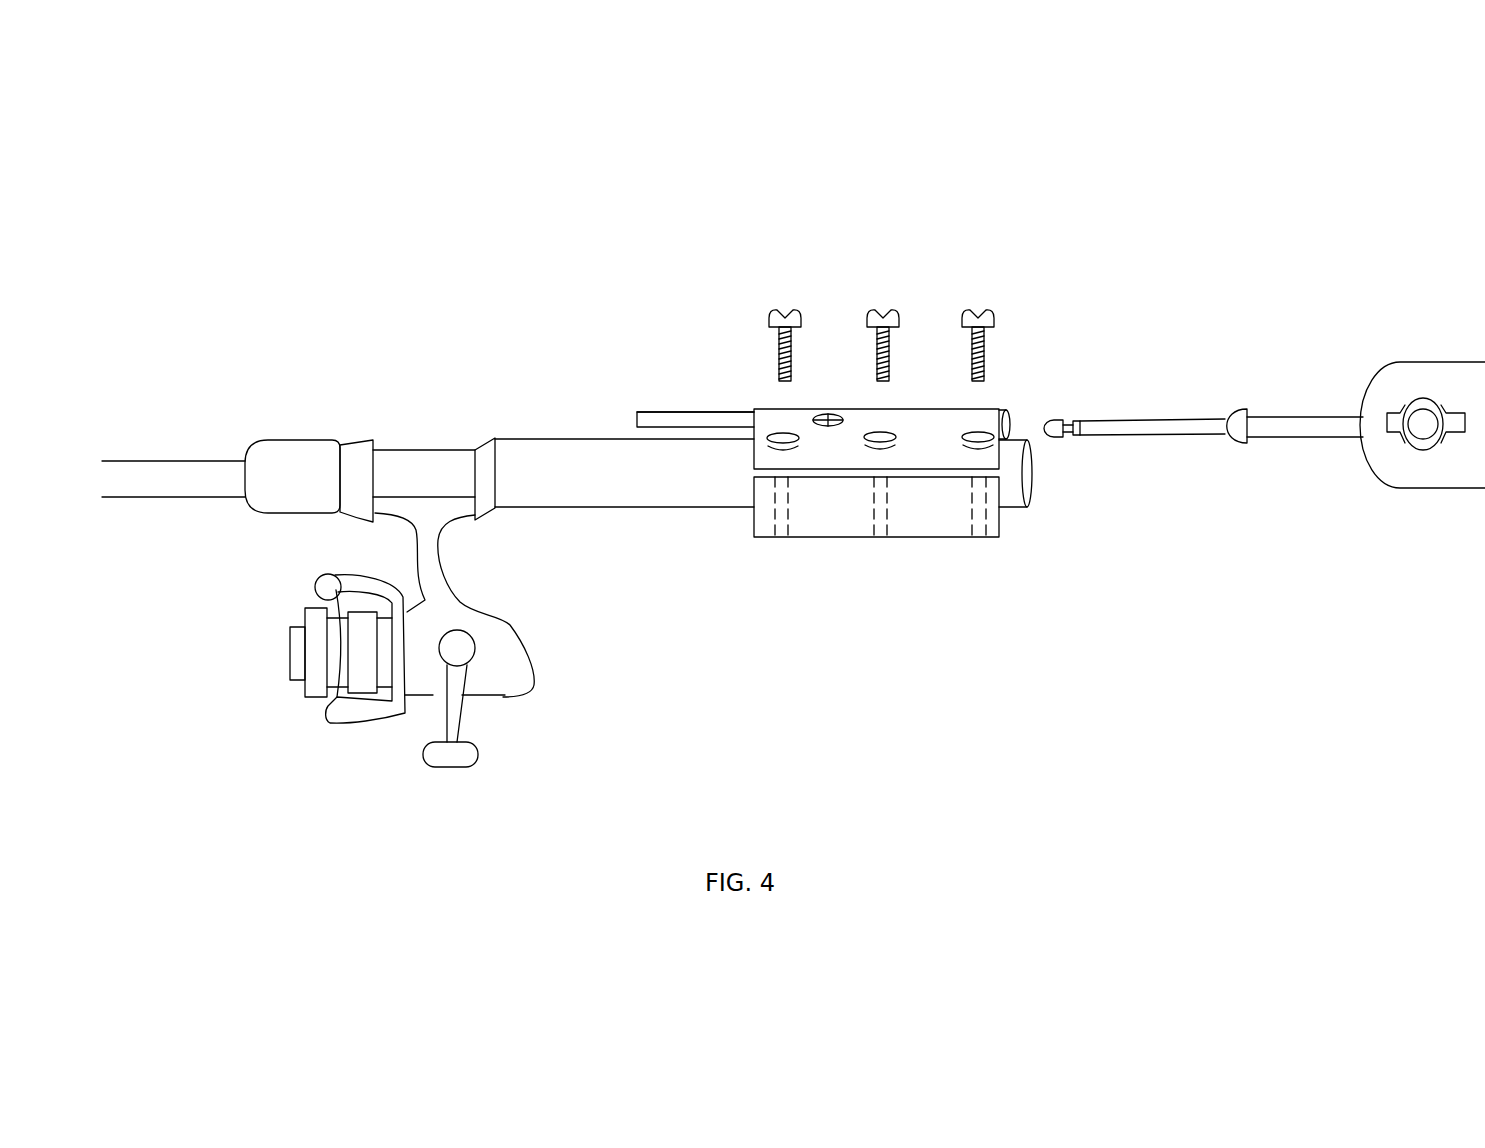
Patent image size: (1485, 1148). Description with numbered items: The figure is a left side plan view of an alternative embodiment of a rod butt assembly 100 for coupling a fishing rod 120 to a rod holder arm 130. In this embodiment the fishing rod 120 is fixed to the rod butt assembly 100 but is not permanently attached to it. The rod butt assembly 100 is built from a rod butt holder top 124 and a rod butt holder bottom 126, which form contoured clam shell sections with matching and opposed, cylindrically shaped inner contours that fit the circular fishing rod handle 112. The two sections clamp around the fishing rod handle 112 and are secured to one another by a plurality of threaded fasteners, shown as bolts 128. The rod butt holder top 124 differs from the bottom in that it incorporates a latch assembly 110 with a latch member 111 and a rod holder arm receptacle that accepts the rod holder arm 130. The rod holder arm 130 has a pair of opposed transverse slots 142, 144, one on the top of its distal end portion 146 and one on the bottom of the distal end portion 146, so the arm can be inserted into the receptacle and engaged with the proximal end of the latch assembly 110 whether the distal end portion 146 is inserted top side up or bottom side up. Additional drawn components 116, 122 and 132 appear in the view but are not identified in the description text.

The rod butt assembly 100 is at (985, 232).
The latch assembly 110 is at (817, 418).
The latch member 111 is at (650, 412).
The fishing rod handle 112 is at (628, 503).
The mounting plate 116 is at (678, 412).
The fishing rod 120 is at (300, 440).
The fishing reel 122 is at (505, 697).
The rod butt holder top 124 is at (990, 408).
The rod butt holder bottom 126 is at (940, 537).
The bolts 128 is at (975, 312).
The rod holder arm 130 is at (1203, 410).
The wing nut 132 is at (1398, 433).
The transverse slot 142 is at (1072, 420).
The transverse slot 144 is at (1077, 437).
The distal end portion 146 is at (1056, 437).